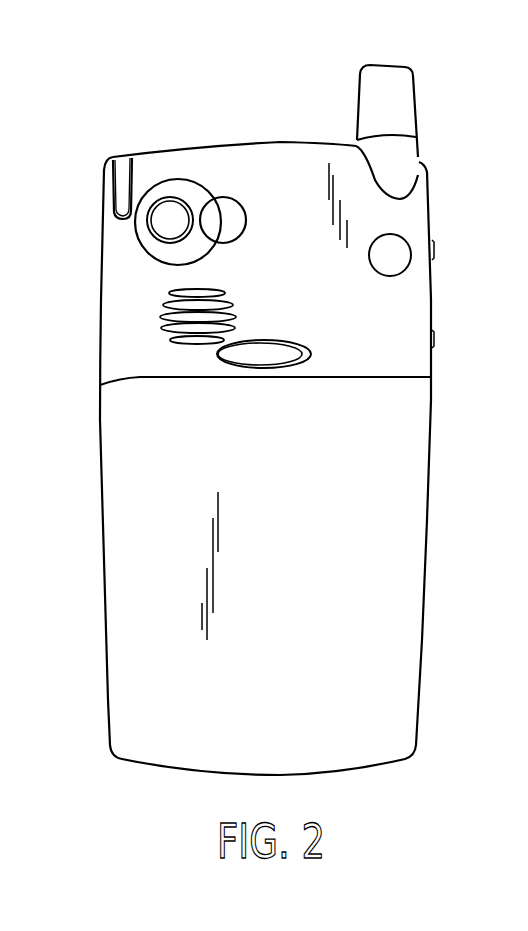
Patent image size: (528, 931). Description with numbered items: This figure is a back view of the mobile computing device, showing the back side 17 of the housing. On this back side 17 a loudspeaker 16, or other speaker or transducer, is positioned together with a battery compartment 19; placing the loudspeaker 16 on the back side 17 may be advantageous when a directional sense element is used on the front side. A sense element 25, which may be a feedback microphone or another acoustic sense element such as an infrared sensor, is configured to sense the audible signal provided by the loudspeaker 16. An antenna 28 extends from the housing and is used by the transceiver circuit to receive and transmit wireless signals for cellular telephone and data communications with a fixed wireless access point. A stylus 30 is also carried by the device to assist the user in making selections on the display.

The loudspeaker 16 is at (167, 305).
The back side 17 is at (290, 563).
The battery compartment 19 is at (382, 410).
The sense element 25 is at (197, 318).
The antenna 28 is at (417, 87).
The stylus 30 is at (126, 156).